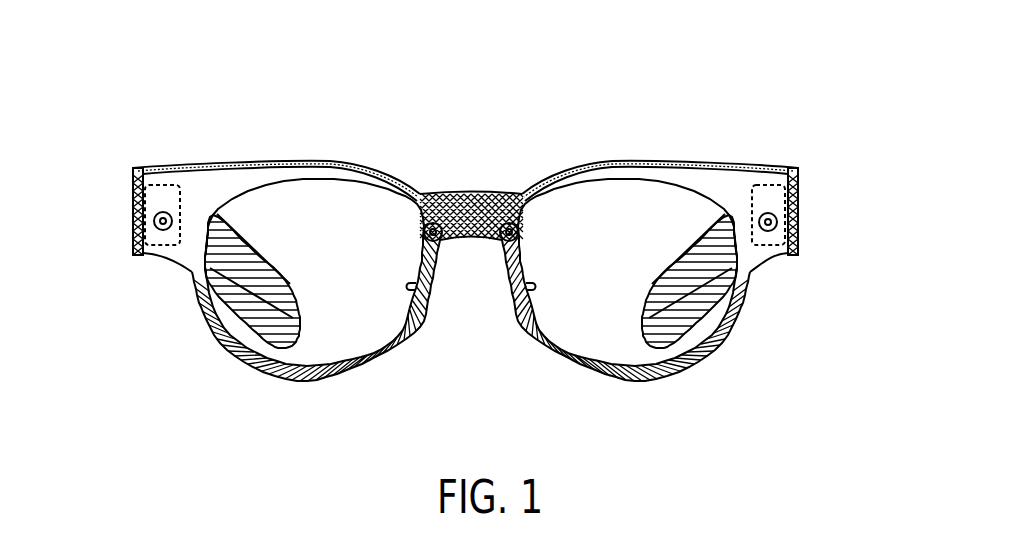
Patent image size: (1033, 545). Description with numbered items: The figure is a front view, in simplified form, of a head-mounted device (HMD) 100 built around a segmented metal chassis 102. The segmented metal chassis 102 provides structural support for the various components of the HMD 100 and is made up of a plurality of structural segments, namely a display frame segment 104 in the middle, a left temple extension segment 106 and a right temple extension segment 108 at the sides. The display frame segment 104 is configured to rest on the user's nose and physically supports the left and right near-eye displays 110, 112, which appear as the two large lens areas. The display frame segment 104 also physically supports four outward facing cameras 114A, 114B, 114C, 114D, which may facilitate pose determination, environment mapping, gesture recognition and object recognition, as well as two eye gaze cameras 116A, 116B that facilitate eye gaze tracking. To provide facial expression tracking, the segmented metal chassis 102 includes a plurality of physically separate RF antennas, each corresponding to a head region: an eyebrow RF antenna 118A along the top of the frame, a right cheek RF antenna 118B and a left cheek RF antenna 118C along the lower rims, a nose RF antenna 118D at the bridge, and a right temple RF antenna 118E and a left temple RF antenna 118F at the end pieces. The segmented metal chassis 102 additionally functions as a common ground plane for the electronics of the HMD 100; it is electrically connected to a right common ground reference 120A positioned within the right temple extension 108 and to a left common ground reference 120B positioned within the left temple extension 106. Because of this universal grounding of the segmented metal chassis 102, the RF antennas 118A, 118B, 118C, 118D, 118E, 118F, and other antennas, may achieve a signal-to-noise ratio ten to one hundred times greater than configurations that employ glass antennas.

The head-mounted device 100 is at (772, 58).
The segmented metal chassis 102 is at (206, 126).
The display frame segment 104 is at (473, 185).
The left temple extension segment 106 is at (638, 328).
The right temple extension segment 108 is at (302, 324).
The left near-eye display 110 is at (581, 247).
The right near-eye display 112 is at (395, 247).
The outward facing camera 114A is at (160, 230).
The outward facing camera 114B is at (437, 223).
The outward facing camera 114C is at (509, 223).
The outward facing camera 114D is at (766, 232).
The eye gaze camera 116A is at (411, 292).
The eye gaze camera 116B is at (527, 292).
The eyebrow RF antenna 118A is at (330, 162).
The right cheek RF antenna 118B is at (310, 382).
The left cheek RF antenna 118C is at (613, 382).
The nose RF antenna 118D is at (478, 241).
The right temple RF antenna 118E is at (138, 178).
The left temple RF antenna 118F is at (796, 190).
The right common ground reference 120A is at (224, 262).
The left common ground reference 120B is at (686, 262).